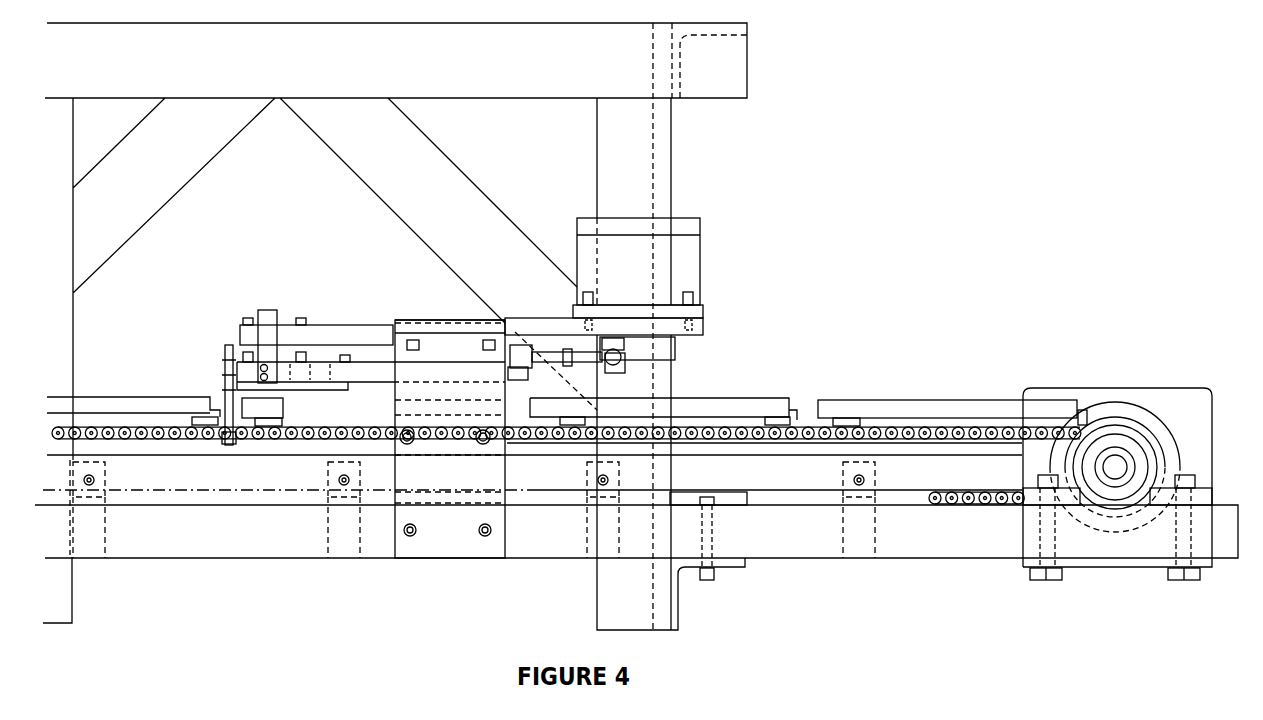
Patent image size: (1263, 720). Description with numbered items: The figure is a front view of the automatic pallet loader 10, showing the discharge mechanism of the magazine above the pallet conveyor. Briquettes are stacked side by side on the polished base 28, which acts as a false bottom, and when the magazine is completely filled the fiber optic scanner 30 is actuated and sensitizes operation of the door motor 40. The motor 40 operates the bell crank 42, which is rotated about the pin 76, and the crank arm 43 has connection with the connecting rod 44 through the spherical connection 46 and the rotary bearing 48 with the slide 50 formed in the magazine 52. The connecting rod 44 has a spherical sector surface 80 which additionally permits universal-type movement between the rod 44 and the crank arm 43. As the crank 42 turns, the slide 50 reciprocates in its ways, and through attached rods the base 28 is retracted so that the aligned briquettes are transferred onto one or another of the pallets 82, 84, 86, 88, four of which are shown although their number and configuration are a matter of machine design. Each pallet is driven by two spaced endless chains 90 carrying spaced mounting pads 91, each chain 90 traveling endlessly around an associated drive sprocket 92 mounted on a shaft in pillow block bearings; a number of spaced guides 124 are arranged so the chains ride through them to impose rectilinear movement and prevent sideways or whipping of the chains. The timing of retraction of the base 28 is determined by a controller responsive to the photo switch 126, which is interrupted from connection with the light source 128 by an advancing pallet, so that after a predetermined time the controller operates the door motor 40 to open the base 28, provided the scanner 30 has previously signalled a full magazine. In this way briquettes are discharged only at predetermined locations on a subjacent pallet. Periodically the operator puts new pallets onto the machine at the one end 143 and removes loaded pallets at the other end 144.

The automatic pallet loader 10 is at (850, 282).
The polished base 28 is at (320, 388).
The fiber optic scanner 30 is at (265, 312).
The door motor 40 is at (690, 262).
The bell crank 42 is at (675, 345).
The crank arm 43 is at (580, 365).
The connecting rod 44 is at (548, 352).
The spherical connection 46 is at (625, 360).
The rotary bearing 48 is at (617, 345).
The slide 50 is at (452, 370).
The magazine 52 is at (432, 318).
The pin 76 is at (640, 305).
The spherical sector surface 80 is at (510, 350).
The pallet 82 is at (870, 410).
The pallet 84 is at (760, 393).
The pallet 86 is at (258, 408).
The pallet 88 is at (113, 408).
The endless chain 90 is at (960, 433).
The mounting pad 91 is at (273, 413).
The drive sprocket 92 is at (1130, 430).
The guide 124 is at (302, 448).
The photo switch 126 is at (225, 352).
The light source 128 is at (230, 445).
The one end 143 is at (1055, 381).
The other end 144 is at (52, 339).